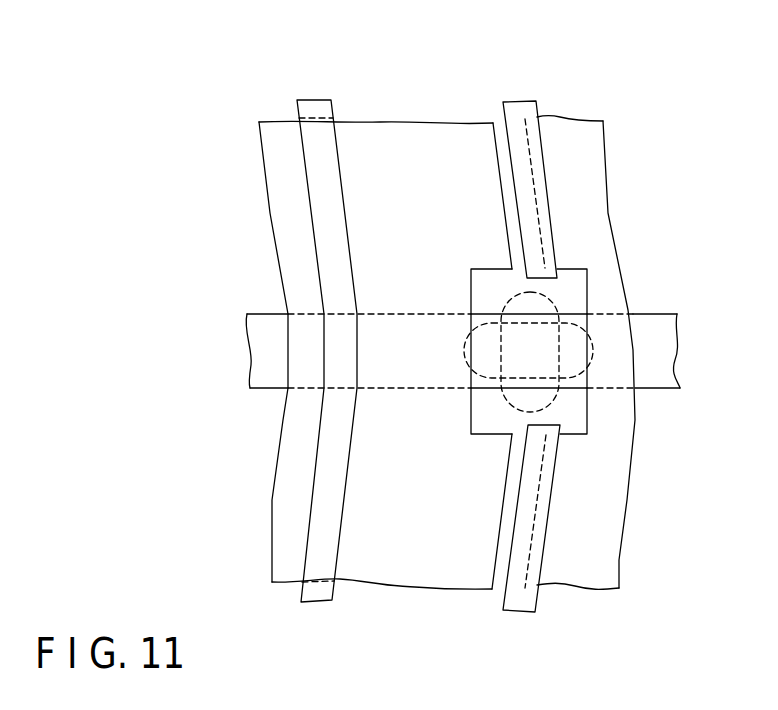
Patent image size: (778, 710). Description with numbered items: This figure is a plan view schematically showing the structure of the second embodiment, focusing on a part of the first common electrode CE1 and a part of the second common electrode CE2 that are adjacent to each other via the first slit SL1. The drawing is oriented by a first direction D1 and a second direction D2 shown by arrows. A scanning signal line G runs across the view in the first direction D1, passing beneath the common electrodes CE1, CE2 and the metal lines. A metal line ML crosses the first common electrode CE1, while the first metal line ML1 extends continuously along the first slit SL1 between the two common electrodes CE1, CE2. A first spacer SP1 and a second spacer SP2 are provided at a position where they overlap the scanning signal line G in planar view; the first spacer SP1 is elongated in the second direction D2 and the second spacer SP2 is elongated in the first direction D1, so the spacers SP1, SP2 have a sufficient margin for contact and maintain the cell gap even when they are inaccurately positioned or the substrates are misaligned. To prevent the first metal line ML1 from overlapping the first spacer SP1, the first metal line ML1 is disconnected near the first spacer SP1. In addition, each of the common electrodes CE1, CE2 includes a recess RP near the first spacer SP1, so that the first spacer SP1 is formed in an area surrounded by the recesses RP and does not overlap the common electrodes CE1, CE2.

The first direction D1 is at (152, 38).
The second direction D2 is at (188, 3).
The metal line ML is at (331, 102).
The first metal line ML1 is at (530, 100).
The first slit SL1 is at (493, 106).
The recess RP is at (470, 280).
The first spacer SP1 is at (553, 400).
The second spacer SP2 is at (597, 345).
The scanning signal line G is at (670, 360).
The first common electrode CE1 is at (433, 592).
The second common electrode CE2 is at (595, 592).